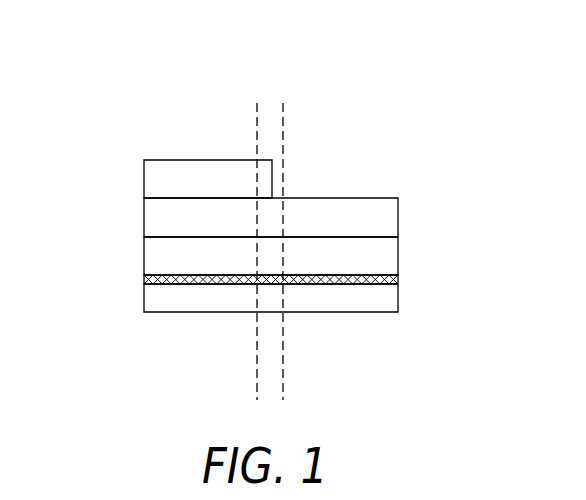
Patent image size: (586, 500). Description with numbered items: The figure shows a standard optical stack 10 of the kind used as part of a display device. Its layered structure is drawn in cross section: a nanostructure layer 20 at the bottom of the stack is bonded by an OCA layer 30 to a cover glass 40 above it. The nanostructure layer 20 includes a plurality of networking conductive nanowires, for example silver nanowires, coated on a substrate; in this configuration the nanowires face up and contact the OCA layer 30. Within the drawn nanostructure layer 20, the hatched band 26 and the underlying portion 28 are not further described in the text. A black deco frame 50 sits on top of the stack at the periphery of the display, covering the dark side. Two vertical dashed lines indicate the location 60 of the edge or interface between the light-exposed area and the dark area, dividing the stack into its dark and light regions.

The optical stack 10 is at (417, 119).
The nanostructure layer 20 is at (136, 272).
The first layer 26 is at (398, 280).
The second layer 28 is at (398, 293).
The OCA layer 30 is at (144, 260).
The cover glass 40 is at (144, 222).
The black deco frame 50 is at (144, 183).
The edge between light-exposed area and dark area 60 is at (269, 133).